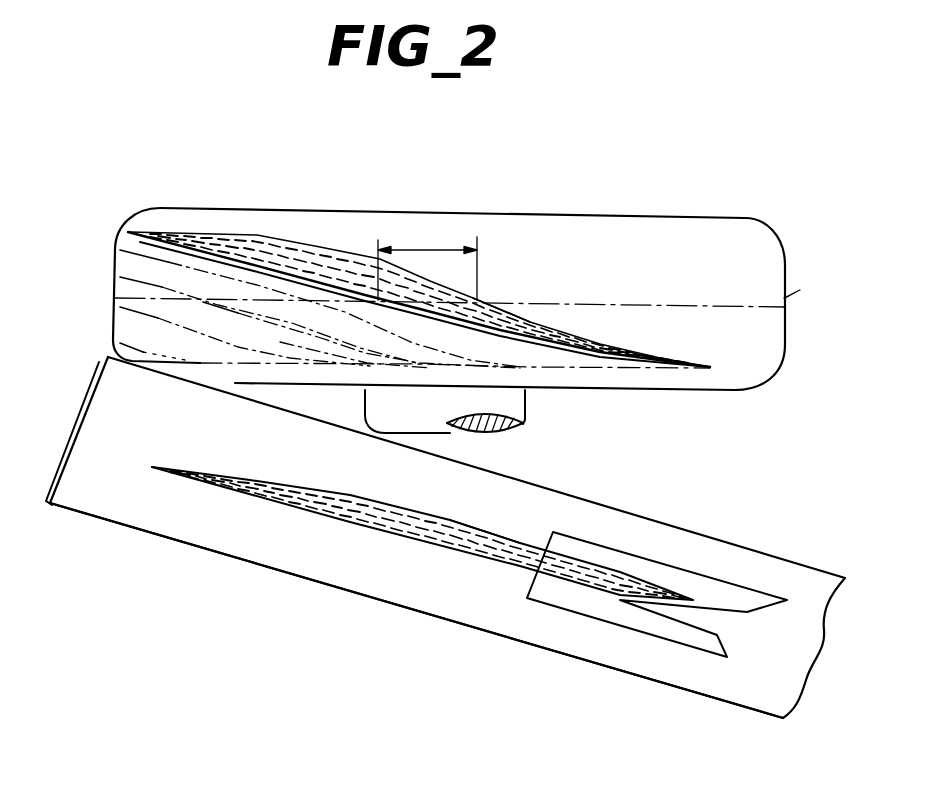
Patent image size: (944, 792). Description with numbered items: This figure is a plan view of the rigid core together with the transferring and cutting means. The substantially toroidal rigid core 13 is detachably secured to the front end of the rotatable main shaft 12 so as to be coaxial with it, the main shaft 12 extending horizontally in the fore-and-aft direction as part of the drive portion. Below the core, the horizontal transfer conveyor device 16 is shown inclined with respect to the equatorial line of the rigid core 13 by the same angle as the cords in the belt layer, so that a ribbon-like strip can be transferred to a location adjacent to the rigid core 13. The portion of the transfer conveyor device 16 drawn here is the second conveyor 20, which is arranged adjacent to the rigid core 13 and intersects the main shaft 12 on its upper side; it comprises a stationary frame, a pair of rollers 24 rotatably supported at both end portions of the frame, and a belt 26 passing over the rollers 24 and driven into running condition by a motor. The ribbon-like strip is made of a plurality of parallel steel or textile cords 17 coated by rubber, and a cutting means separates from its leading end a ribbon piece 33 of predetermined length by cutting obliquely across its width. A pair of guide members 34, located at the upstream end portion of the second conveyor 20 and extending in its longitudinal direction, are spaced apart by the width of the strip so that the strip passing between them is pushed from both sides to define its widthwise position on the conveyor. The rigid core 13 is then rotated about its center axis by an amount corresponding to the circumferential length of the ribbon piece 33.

The main shaft 12 is at (525, 423).
The rigid core 13 is at (638, 226).
The transfer conveyor device 16 is at (645, 678).
The cords 17 is at (527, 315).
The second conveyor 20 is at (513, 640).
The rollers 24 is at (84, 524).
The belt 26 is at (262, 556).
The ribbon piece 33 is at (648, 358).
The guide members 34 is at (673, 572).